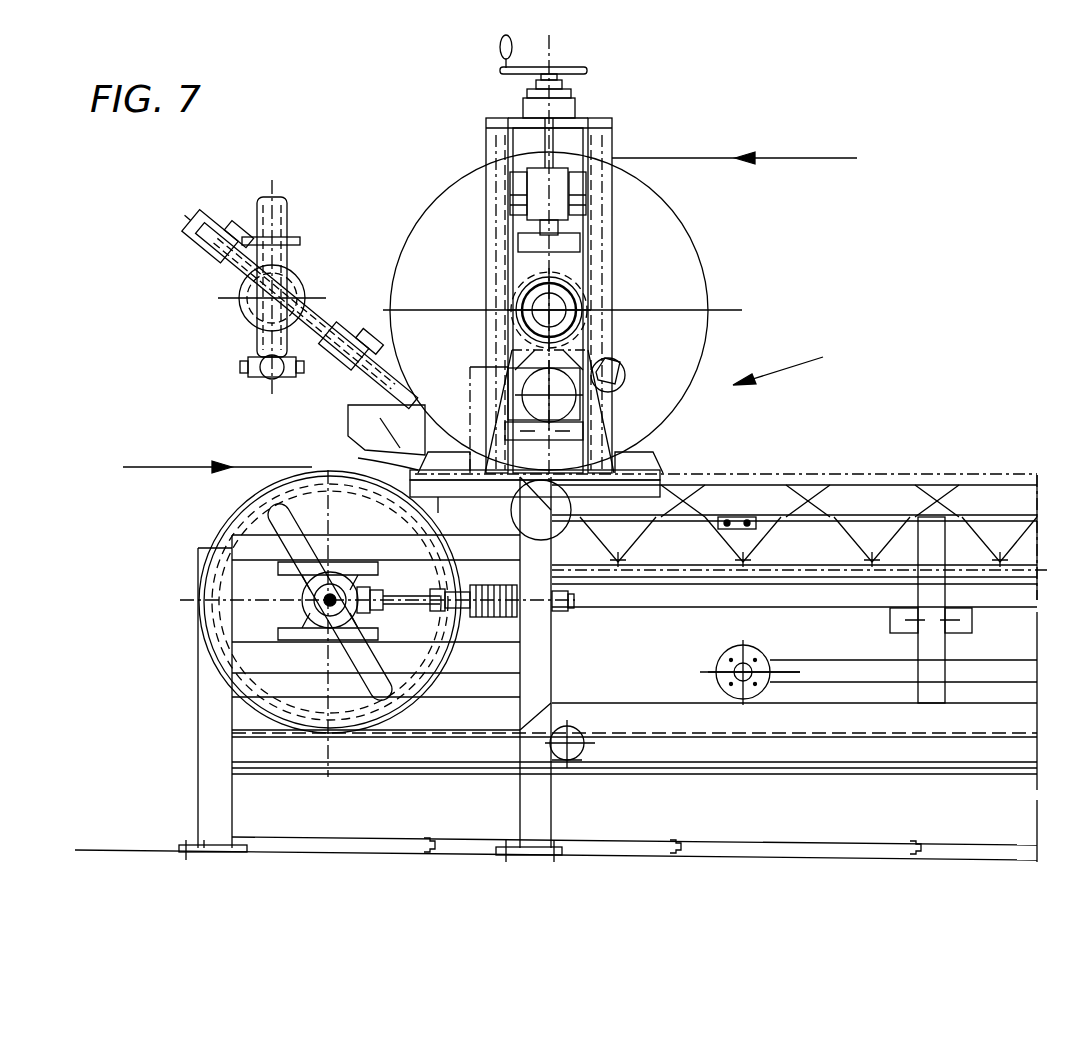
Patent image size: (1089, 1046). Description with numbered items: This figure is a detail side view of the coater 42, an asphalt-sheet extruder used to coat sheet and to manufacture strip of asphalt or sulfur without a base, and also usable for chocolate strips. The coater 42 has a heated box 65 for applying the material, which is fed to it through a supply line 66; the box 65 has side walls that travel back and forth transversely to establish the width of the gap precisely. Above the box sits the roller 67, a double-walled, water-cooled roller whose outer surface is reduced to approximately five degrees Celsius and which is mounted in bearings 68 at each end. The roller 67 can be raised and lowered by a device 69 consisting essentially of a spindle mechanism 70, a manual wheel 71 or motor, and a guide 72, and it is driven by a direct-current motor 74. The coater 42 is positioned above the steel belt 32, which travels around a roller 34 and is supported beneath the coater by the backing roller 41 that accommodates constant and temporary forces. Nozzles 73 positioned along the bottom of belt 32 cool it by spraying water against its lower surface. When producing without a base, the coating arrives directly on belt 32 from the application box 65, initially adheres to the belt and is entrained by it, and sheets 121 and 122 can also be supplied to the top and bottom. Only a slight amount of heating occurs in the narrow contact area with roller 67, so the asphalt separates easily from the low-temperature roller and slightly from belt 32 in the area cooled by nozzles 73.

The steel belt 32 is at (408, 470).
The roller 34 is at (228, 518).
The backing roller 41 is at (572, 505).
The coater 42 is at (797, 362).
The heated box 65 is at (348, 413).
The supply line 66 is at (300, 297).
The roller 67 is at (432, 222).
The bearings 68 is at (582, 300).
The device 69 is at (605, 145).
The adjusting screw 70 is at (540, 138).
The manual wheel 71 is at (590, 70).
The guide 72 is at (512, 240).
The nozzles 73 is at (624, 560).
The direct-current motor 74 is at (563, 358).
The sheet 121 is at (807, 157).
The sheet 122 is at (140, 467).